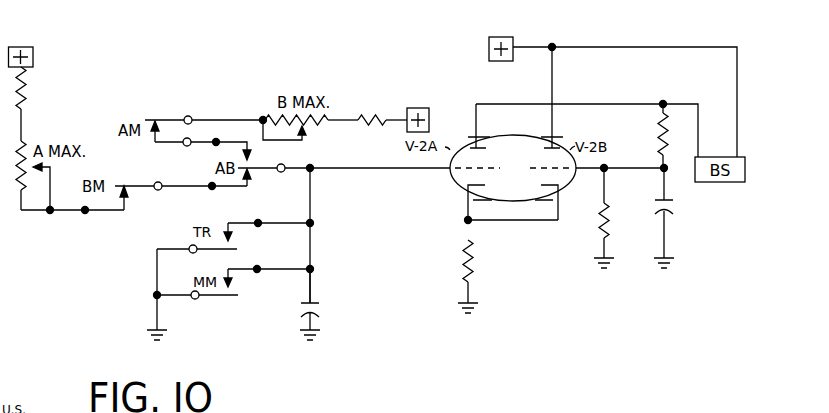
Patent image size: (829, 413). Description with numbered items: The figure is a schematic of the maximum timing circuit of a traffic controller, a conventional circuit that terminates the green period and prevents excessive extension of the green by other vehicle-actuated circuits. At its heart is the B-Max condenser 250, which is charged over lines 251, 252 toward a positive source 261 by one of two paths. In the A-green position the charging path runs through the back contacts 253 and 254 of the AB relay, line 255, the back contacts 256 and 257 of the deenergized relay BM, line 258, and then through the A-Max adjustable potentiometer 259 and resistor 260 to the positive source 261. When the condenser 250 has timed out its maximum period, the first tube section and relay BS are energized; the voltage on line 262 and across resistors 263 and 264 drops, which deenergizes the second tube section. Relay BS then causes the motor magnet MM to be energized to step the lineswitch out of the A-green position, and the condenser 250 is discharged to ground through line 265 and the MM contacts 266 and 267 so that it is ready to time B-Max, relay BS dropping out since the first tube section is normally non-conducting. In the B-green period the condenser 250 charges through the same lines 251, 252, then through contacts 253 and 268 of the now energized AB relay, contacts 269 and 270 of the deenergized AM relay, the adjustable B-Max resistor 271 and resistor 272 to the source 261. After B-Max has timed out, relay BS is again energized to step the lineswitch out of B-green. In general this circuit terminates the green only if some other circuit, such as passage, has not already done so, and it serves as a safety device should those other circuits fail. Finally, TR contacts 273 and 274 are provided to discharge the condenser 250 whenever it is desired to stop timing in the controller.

The B-Max condenser 250 is at (321, 308).
The line 251 is at (312, 205).
The line 252 is at (306, 166).
The contact of AB relay 253 is at (276, 171).
The back contact of AB relay 254 is at (250, 188).
The line 255 is at (191, 188).
The back contact of relay BM 256 is at (141, 188).
The back contact of relay BM 257 is at (113, 212).
The line 258 is at (37, 212).
The A-Max adjustable potentiometer 259 is at (18, 168).
The resistor 260 is at (26, 93).
The positive source 261 is at (33, 57).
The line 262 is at (609, 103).
The resistor 263 is at (658, 127).
The resistor 264 is at (608, 221).
The line 265 is at (283, 271).
The MM contact 266 is at (233, 266).
The MM contact 267 is at (222, 297).
The contact of AB relay 268 is at (245, 141).
The contact of AM relay 269 is at (153, 143).
The contact of AM relay 270 is at (155, 118).
The adjustable B-Max resistor 271 is at (310, 128).
The resistor 272 is at (370, 118).
The TR contact 273 is at (232, 227).
The TR contact 274 is at (208, 252).